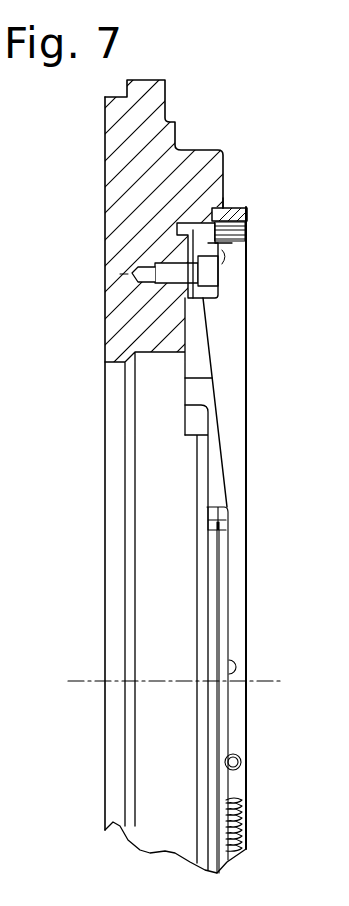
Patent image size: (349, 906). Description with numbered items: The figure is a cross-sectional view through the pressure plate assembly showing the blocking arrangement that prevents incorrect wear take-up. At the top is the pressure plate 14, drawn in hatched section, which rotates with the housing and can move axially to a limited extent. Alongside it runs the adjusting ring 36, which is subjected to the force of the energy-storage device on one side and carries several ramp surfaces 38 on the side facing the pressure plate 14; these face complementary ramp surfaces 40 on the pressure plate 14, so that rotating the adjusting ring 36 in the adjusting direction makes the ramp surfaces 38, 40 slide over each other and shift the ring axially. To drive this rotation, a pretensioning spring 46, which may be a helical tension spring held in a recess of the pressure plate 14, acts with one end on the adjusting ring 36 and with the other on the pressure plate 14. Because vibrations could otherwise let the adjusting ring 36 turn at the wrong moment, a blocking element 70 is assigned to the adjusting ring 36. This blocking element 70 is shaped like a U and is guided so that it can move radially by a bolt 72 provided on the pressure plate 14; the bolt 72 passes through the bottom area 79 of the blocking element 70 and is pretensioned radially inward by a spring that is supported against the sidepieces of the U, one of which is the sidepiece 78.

The pressure plate 14 is at (115, 117).
The bottom area 79 is at (168, 265).
The bolt 72 is at (168, 268).
The ramp surfaces 38 is at (200, 316).
The sidepiece 78 is at (212, 246).
The blocking element 70 is at (222, 300).
The ramp surfaces 40 is at (212, 348).
The adjusting ring 36 is at (247, 413).
The pretensioning spring 46 is at (240, 798).